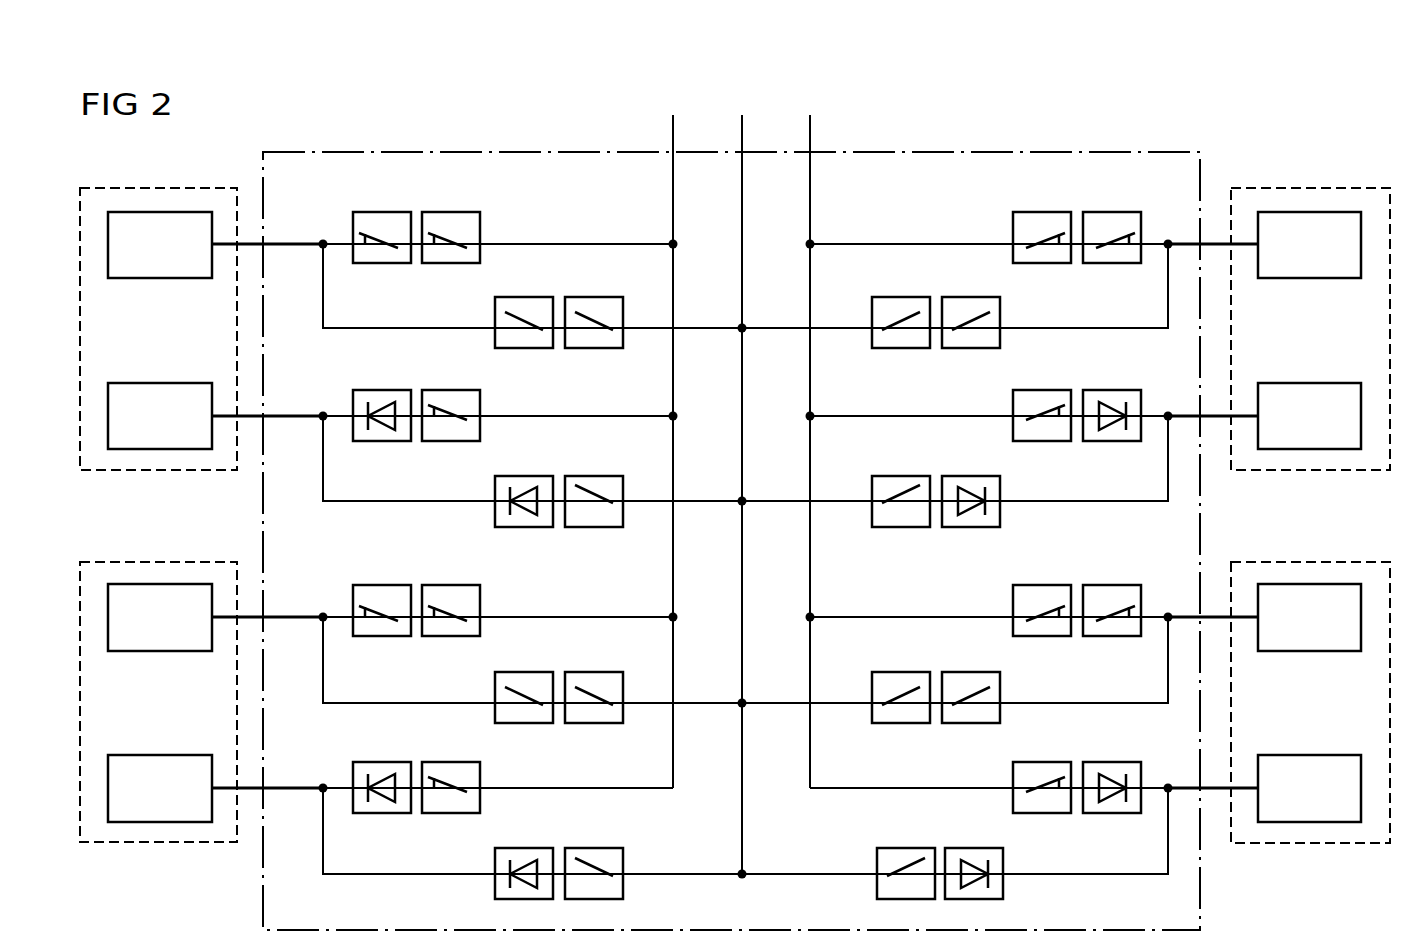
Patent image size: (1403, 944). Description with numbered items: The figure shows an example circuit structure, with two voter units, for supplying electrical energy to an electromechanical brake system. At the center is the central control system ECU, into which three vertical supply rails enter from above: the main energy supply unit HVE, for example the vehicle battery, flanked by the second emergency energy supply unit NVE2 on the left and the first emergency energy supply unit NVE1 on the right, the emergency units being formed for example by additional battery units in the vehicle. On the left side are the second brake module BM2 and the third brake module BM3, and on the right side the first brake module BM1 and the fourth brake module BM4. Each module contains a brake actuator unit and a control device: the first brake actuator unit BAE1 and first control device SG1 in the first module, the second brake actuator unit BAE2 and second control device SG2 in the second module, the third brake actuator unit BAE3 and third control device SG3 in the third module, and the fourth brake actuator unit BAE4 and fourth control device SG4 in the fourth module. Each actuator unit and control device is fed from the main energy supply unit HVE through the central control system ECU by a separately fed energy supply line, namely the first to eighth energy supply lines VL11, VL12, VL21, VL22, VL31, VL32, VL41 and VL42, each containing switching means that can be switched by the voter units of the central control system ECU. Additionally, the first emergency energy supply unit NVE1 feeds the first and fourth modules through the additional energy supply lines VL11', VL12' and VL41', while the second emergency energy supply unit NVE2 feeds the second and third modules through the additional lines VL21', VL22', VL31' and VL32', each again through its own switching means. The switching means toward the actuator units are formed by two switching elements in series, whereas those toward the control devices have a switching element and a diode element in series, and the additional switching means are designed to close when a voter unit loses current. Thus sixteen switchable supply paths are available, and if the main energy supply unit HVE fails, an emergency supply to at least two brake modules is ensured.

The central control system ECU is at (917, 152).
The second emergency energy supply unit NVE2 is at (678, 431).
The main energy supply unit HVE is at (746, 474).
The first emergency energy supply unit NVE1 is at (813, 431).
The first brake module BM1 is at (1310, 329).
The second brake module BM2 is at (158, 329).
The third brake module BM3 is at (158, 702).
The fourth brake module BM4 is at (1310, 702).
The first brake actuator unit BAE1 is at (1264, 245).
The second brake actuator unit BAE2 is at (215, 245).
The third brake actuator unit BAE3 is at (215, 617).
The fourth brake actuator unit BAE4 is at (1264, 617).
The first control device SG1 is at (1264, 416).
The second control device SG2 is at (215, 416).
The third control device SG3 is at (215, 788).
The fourth control device SG4 is at (1264, 788).
The first additional energy supply line VL11' is at (989, 213).
The first energy supply line VL11 is at (955, 286).
The second additional energy supply line VL12' is at (989, 386).
The second energy supply line VL12 is at (955, 458).
The third additional energy supply line VL21' is at (498, 213).
The third energy supply line VL21 is at (535, 288).
The fourth additional energy supply line VL22' is at (498, 386).
The fourth energy supply line VL22 is at (535, 461).
The fifth additional energy supply line VL31' is at (498, 586).
The fifth energy supply line VL31 is at (535, 662).
The sixth additional energy supply line VL32' is at (496, 758).
The sixth energy supply line VL32 is at (535, 833).
The seventh additional energy supply line VL41' is at (989, 586).
The seventh energy supply line VL41 is at (955, 660).
The eighth energy supply line VL42 is at (928, 788).